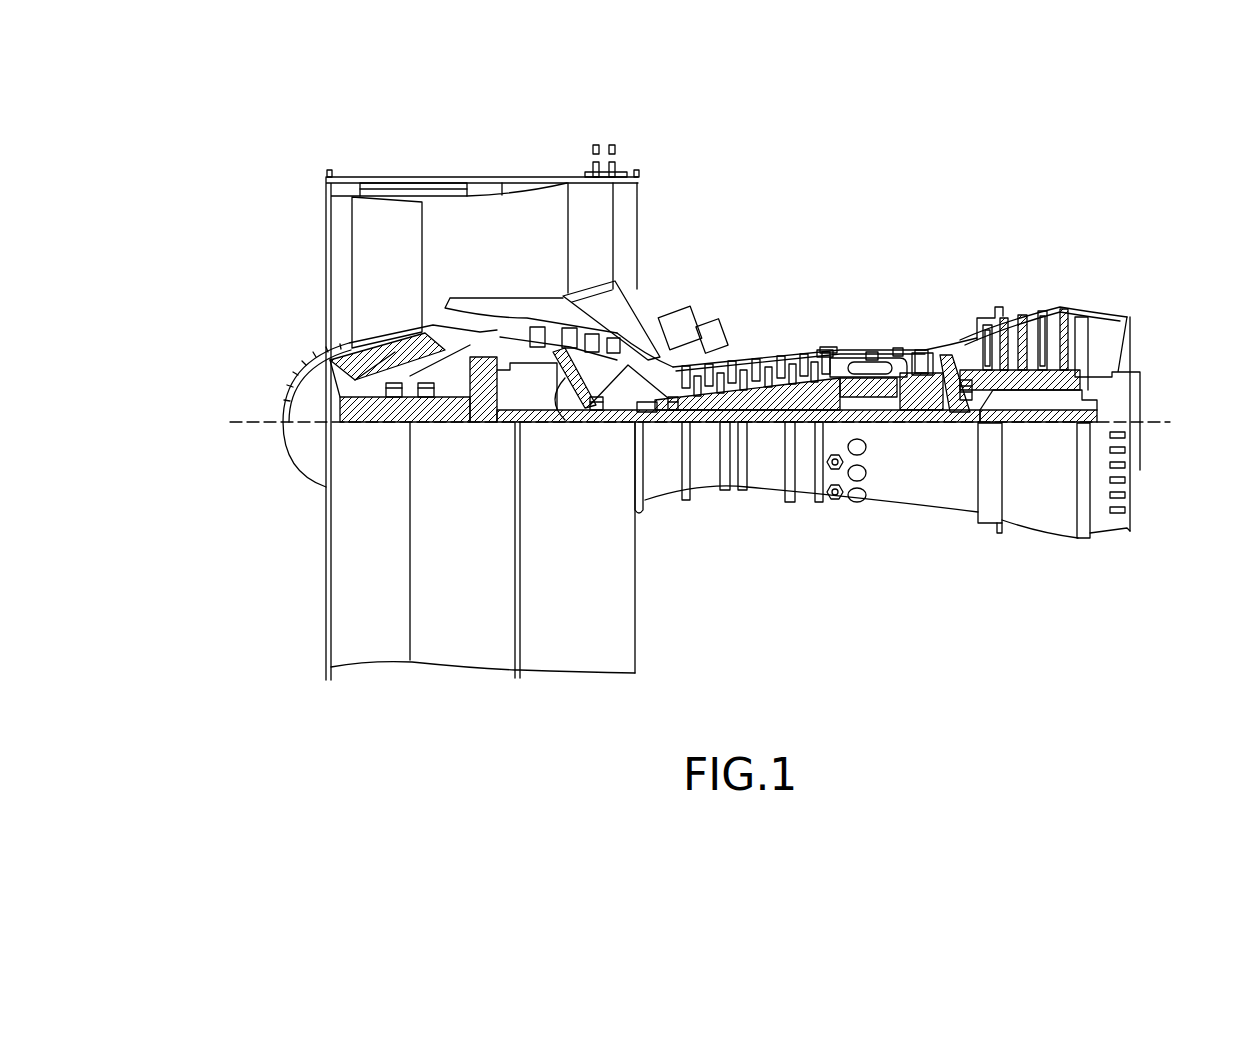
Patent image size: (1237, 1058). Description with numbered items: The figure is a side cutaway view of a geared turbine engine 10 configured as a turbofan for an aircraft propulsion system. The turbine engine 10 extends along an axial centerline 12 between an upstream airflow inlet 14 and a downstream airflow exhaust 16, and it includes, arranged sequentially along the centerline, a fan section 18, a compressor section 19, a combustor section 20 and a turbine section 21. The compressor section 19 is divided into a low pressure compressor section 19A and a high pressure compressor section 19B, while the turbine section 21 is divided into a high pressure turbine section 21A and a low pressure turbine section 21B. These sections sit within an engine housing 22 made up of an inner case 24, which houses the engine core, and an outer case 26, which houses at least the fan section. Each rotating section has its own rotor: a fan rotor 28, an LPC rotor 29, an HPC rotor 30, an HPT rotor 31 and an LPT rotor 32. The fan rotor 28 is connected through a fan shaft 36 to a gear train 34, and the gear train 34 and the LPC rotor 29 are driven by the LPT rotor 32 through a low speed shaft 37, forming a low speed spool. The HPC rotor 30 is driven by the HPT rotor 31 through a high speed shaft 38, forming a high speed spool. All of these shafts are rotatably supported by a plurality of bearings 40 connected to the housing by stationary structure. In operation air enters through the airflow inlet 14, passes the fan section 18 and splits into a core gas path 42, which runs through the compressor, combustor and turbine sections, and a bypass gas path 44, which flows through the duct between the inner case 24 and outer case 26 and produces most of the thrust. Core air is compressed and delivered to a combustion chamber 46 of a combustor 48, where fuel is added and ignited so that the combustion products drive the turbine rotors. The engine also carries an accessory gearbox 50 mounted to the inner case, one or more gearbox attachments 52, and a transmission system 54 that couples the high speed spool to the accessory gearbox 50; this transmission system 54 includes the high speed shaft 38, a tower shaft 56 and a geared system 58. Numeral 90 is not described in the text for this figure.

The geared turbine engine 10 is at (252, 141).
The axial centerline 12 is at (1168, 423).
The airflow inlet 14 is at (328, 221).
The airflow exhaust 16 is at (1133, 342).
The fan section 18 is at (465, 163).
The compressor section 19 is at (818, 106).
The low pressure compressor section 19A is at (640, 149).
The high pressure compressor section 19B is at (818, 294).
The combustor section 20 is at (905, 294).
The turbine section 21 is at (1110, 234).
The high pressure turbine section 21A is at (965, 294).
The low pressure turbine section 21B is at (1110, 294).
The engine housing 22 is at (655, 530).
The inner case 24 is at (798, 505).
The outer case 26 is at (592, 675).
The fan rotor 28 is at (336, 366).
The LPC rotor 29 is at (563, 403).
The HPC rotor 30 is at (760, 400).
The HPT rotor 31 is at (917, 400).
The LPT rotor 32 is at (1042, 376).
The gear train 34 is at (487, 410).
The fan shaft 36 is at (362, 421).
The low speed shaft 37 is at (1040, 420).
The high speed shaft 38 is at (878, 403).
The bearings 40 is at (422, 393).
The core gas path 42 is at (478, 326).
The bypass gas path 44 is at (508, 257).
The combustion chamber 46 is at (877, 360).
The combustor 48 is at (897, 352).
The accessory gearbox 50 is at (680, 330).
The gearbox attachments 52 is at (713, 333).
The transmission system 54 is at (652, 351).
The tower shaft 56 is at (703, 360).
The geared system 58 is at (635, 453).
The strut frame 90 is at (633, 401).